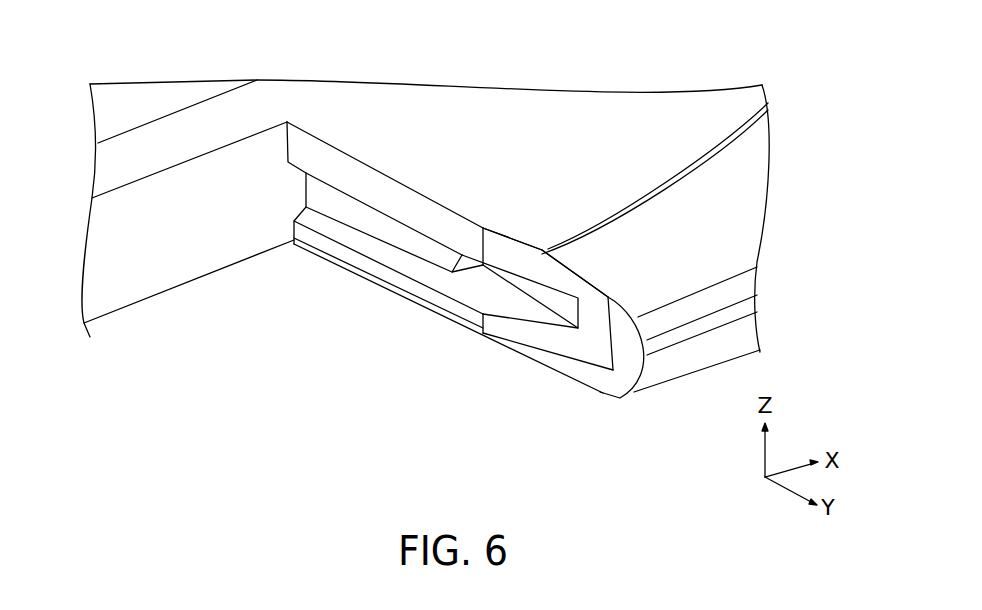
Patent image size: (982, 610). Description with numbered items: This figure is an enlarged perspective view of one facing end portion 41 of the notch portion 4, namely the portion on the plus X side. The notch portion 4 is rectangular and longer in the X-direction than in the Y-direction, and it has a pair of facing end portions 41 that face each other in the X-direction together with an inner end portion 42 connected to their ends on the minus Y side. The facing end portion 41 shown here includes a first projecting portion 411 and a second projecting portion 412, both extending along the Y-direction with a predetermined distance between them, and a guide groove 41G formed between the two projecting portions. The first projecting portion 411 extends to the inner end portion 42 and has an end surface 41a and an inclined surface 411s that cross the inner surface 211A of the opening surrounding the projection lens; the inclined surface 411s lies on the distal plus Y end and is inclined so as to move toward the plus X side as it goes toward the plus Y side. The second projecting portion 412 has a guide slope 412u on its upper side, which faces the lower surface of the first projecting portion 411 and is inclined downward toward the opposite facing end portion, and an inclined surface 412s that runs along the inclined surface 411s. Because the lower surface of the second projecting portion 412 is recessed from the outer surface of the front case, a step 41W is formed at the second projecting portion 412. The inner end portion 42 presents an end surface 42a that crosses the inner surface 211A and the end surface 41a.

The inner surface 211A is at (557, 125).
The inner end portion 42 is at (188, 224).
The end surface 42a is at (145, 200).
The notch portion 4 is at (443, 284).
The facing end portion 41 is at (465, 284).
The first projecting portion 411 is at (447, 198).
The end surface 41a is at (416, 203).
The inclined surface 411s is at (513, 251).
The second projecting portion 412 is at (453, 319).
The guide slope 412u is at (440, 283).
The inclined surface 412s is at (507, 329).
The step 41W is at (543, 361).
The guide groove 41G is at (519, 305).